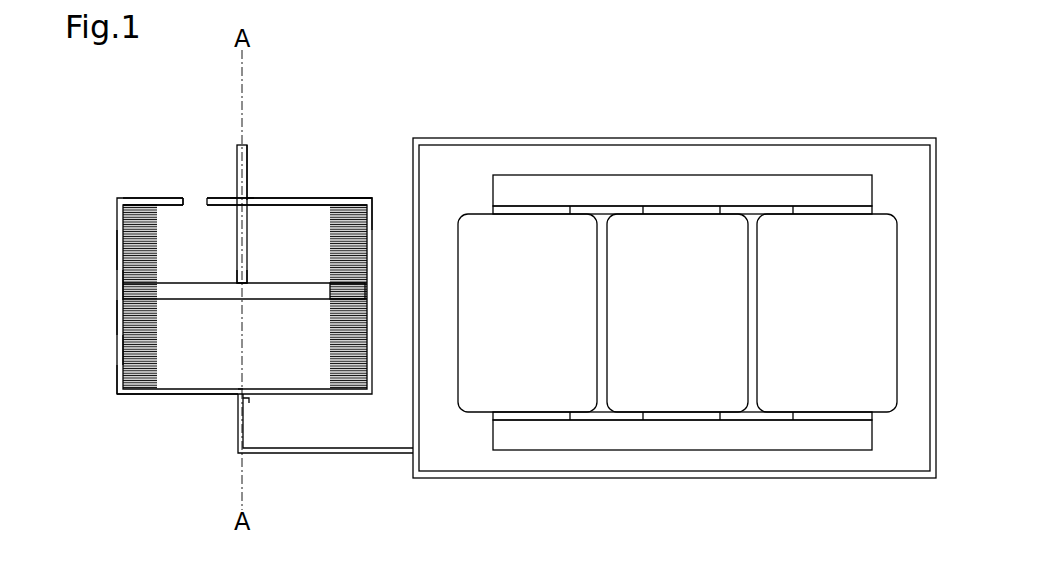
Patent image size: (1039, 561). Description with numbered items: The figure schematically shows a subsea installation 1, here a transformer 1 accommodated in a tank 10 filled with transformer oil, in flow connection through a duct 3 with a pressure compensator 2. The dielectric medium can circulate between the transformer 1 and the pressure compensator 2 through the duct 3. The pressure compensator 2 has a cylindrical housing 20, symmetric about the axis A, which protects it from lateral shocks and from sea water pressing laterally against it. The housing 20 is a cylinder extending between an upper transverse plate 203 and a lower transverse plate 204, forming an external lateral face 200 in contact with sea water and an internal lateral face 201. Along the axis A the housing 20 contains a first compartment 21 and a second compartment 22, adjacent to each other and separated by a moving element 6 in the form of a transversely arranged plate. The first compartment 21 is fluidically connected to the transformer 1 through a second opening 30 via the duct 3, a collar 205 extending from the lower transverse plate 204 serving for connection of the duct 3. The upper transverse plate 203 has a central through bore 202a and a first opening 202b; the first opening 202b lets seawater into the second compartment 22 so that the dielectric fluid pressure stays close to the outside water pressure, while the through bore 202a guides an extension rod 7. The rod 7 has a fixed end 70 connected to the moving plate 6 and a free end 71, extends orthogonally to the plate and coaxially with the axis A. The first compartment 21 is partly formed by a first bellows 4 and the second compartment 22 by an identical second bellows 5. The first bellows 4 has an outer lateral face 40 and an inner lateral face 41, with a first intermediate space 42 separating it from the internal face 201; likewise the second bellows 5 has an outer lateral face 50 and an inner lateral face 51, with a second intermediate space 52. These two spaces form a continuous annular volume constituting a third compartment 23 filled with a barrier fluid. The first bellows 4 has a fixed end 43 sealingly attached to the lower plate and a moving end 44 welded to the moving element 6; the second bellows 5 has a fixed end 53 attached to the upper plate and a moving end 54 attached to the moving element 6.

The subsea installation 1 is at (930, 136).
The tank 10 is at (502, 138).
The pressure compensator 2 is at (80, 205).
The duct 3 is at (326, 456).
The first bellows 4 is at (118, 373).
The second bellows 5 is at (118, 262).
The moving element 6 is at (118, 289).
The extension rod 7 is at (237, 145).
The fixed end 70 is at (251, 281).
The free end 71 is at (247, 156).
The housing 20 is at (118, 346).
The first compartment 21 is at (217, 372).
The second compartment 22 is at (317, 204).
The third compartment 23 is at (118, 319).
The external lateral face 200 is at (373, 203).
The internal lateral face 201 is at (354, 230).
The central through bore 202a is at (251, 197).
The first opening 202b is at (184, 198).
The upper transverse plate 203 is at (147, 197).
The lower transverse plate 204 is at (143, 396).
The collar 205 is at (252, 400).
The second opening 30 is at (250, 383).
The outer lateral face 40 is at (371, 318).
The inner lateral face 41 is at (325, 341).
The first intermediate space 42 is at (370, 366).
The fixed end 43 is at (155, 384).
The moving end 44 is at (155, 303).
The outer lateral face 50 is at (118, 237).
The inner lateral face 51 is at (151, 239).
The second intermediate space 52 is at (370, 260).
The fixed end 53 is at (135, 200).
The moving end 54 is at (155, 277).